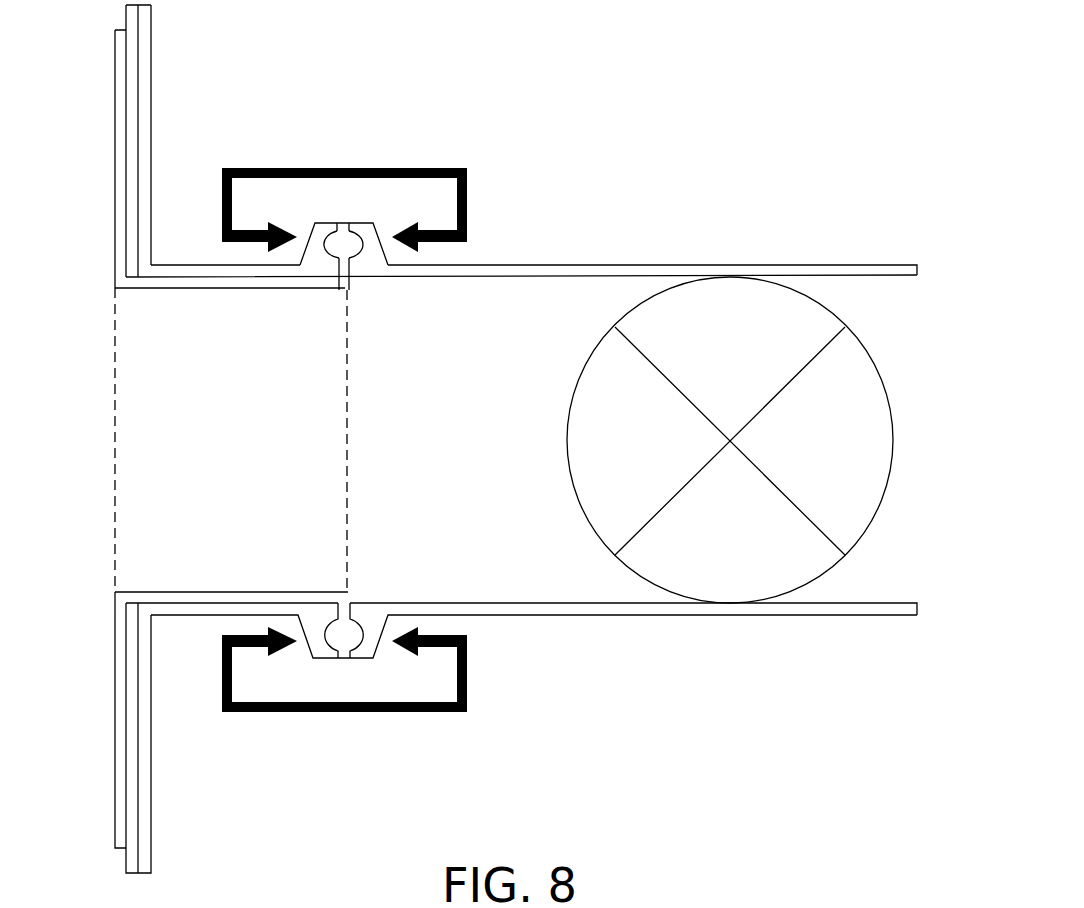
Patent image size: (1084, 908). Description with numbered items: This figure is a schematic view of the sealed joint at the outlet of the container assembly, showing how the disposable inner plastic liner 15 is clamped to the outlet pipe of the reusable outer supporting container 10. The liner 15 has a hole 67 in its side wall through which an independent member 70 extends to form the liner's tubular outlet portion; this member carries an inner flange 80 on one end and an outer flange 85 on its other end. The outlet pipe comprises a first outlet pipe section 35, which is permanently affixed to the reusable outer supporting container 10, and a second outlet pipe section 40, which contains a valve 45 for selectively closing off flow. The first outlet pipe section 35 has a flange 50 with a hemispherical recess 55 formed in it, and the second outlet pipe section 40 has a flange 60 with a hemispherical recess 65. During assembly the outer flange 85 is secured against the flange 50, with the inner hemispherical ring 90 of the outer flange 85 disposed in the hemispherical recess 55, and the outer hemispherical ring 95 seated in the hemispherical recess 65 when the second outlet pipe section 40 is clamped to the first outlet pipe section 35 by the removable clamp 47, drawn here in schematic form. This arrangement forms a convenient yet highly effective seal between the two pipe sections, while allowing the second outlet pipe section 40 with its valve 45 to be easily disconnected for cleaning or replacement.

The reusable outer supporting container 10 is at (152, 80).
The disposable inner plastic liner 15 is at (134, 753).
The first outlet pipe section 35 is at (178, 262).
The second outlet pipe section 40 is at (586, 263).
The valve 45 is at (881, 372).
The removable clamp 47 is at (437, 165).
The flange 50 is at (324, 218).
The hemispherical recess 55 is at (339, 290).
The flange 60 is at (362, 218).
The hemispherical recess 65 is at (349, 290).
The hole 67 is at (132, 602).
The independent member 70 is at (199, 588).
The inner flange 80 is at (116, 202).
The outer flange 85 is at (344, 664).
The inner hemispherical ring 90 is at (327, 251).
The outer hemispherical ring 95 is at (358, 252).